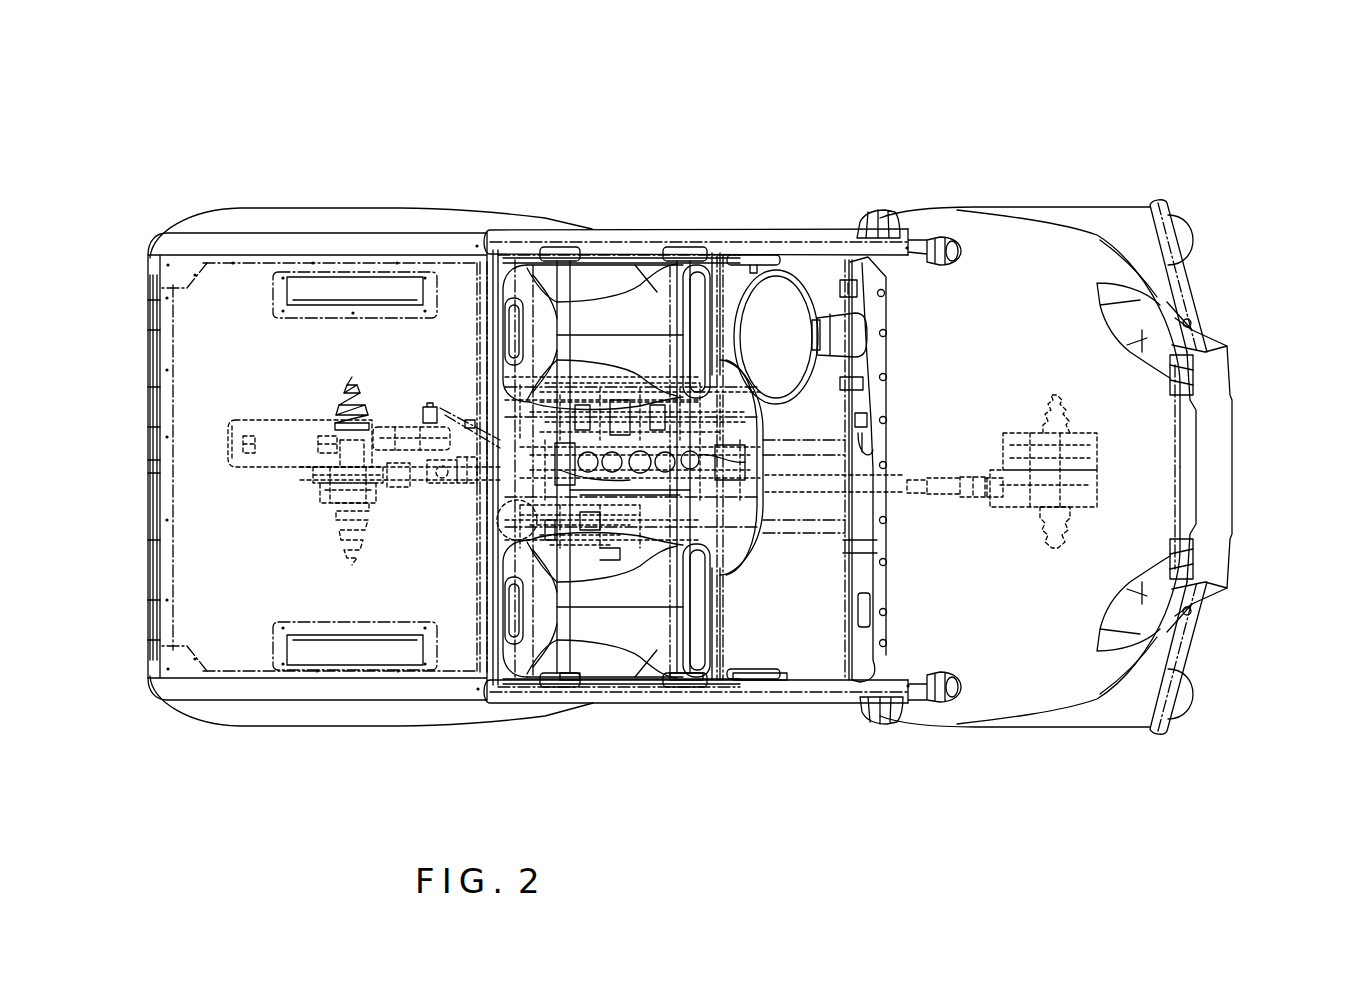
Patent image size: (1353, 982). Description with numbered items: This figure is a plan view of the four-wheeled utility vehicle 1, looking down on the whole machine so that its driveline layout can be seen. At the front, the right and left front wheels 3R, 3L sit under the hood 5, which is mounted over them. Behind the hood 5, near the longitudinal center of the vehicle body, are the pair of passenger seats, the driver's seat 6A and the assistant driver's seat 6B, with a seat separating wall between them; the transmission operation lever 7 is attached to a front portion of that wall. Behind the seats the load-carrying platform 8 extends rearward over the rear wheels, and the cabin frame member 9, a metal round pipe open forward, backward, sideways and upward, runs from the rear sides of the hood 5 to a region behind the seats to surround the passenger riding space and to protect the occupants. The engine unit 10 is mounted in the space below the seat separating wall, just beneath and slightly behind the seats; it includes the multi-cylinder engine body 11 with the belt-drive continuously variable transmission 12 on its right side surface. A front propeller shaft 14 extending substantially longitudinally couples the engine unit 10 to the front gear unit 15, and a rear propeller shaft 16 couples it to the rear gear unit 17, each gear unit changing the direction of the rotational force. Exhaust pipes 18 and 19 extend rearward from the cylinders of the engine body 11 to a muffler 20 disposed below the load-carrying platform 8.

The four-wheeled utility vehicle 1 is at (262, 170).
The left front wheel 3L is at (1192, 236).
The right front wheel 3R is at (1192, 698).
The hood 5 is at (1008, 230).
The driver's seat 6A is at (618, 290).
The assistant driver's seat 6B is at (537, 680).
The transmission operation lever 7 is at (767, 565).
The load-carrying platform 8 is at (217, 256).
The cabin frame member 9 is at (762, 247).
The engine unit 10 is at (636, 584).
The engine body 11 is at (660, 395).
The belt-drive continuously variable transmission 12 is at (597, 557).
The front propeller shaft 14 is at (838, 495).
The front gear unit 15 is at (1043, 535).
The rear propeller shaft 16 is at (453, 485).
The rear gear unit 17 is at (368, 536).
The exhaust pipe 18 is at (470, 410).
The exhaust pipe 19 is at (440, 417).
The muffler 20 is at (228, 419).